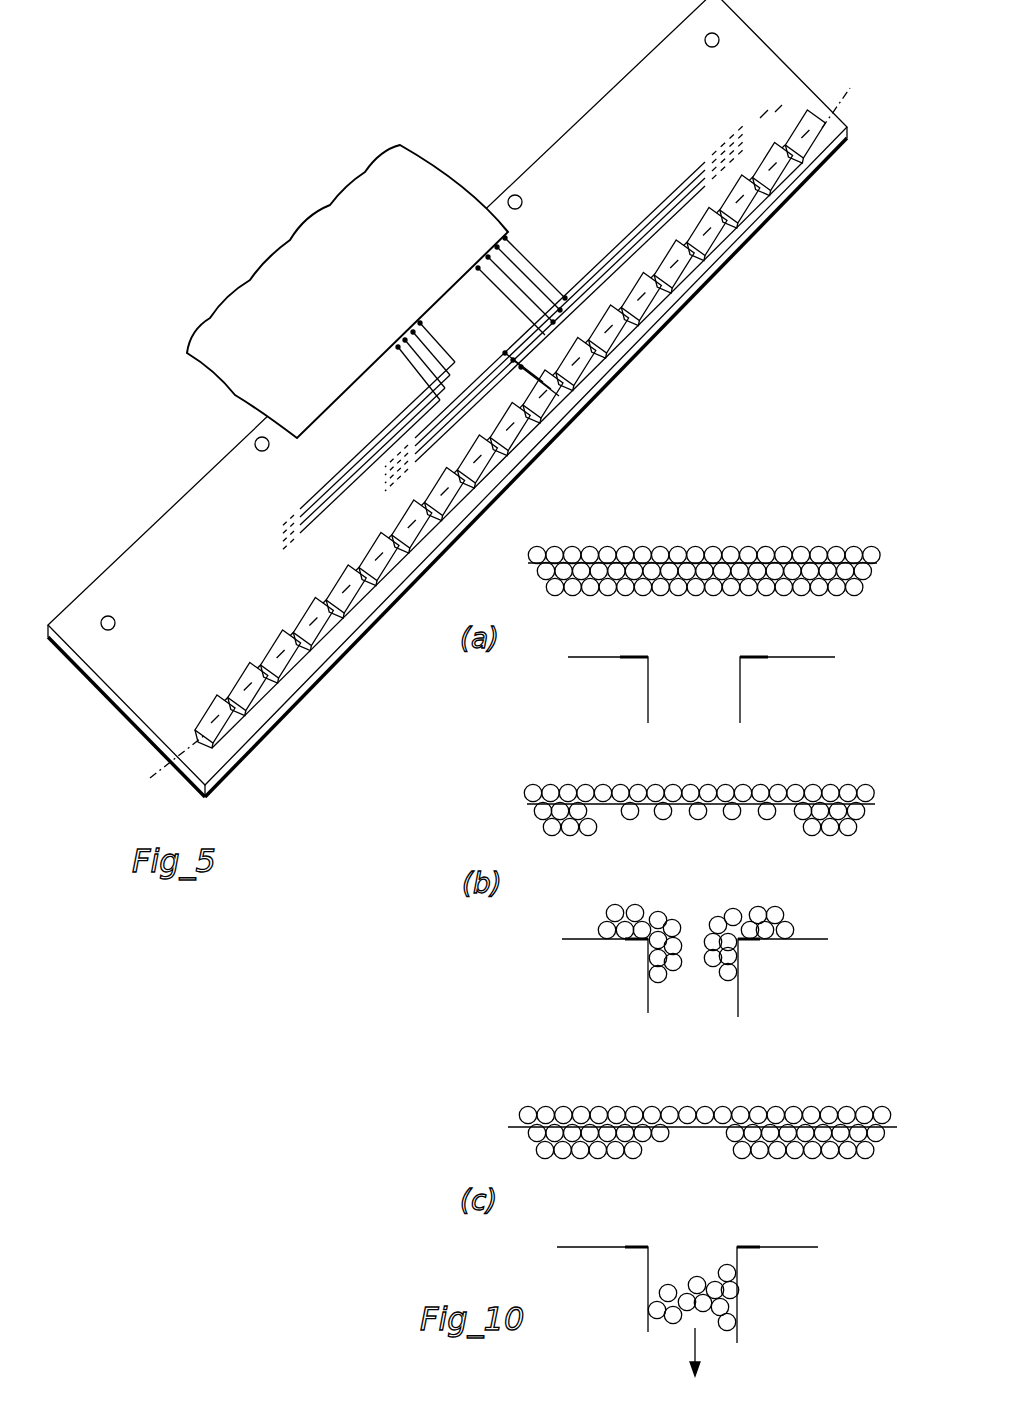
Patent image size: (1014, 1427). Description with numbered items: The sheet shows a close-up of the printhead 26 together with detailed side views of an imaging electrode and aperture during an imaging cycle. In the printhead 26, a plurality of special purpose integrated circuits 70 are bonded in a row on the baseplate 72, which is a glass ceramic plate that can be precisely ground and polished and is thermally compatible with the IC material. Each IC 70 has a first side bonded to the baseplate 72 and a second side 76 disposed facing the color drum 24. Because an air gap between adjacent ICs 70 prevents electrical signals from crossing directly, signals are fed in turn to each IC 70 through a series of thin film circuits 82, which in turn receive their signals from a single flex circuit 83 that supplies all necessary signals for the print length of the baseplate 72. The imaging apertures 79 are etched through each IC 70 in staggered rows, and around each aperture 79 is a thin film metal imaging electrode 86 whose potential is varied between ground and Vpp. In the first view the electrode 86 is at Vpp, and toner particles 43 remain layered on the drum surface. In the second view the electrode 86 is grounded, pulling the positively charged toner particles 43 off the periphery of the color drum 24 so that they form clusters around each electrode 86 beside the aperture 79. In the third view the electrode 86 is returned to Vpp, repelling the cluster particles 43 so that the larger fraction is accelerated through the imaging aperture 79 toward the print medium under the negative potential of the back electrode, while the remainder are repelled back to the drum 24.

In FIG. 10, the color drum 24 is at (693, 546).
In FIG. 5, the printhead 26 is at (456, 402).
In FIG. 10, the toner particles 43 is at (664, 597).
In FIG. 5, the special purpose integrated circuits 70 is at (645, 300).
In FIG. 10, the special purpose integrated circuits 70 is at (696, 1000).
In FIG. 5, the baseplate 72 is at (447, 398).
In FIG. 5, the second side 76 is at (709, 274).
In FIG. 10, the imaging apertures 79 is at (694, 861).
In FIG. 5, the thin film circuits 82 is at (580, 292).
In FIG. 5, the flex circuit 83 is at (347, 291).
In FIG. 10, the imaging electrode 86 is at (641, 657).